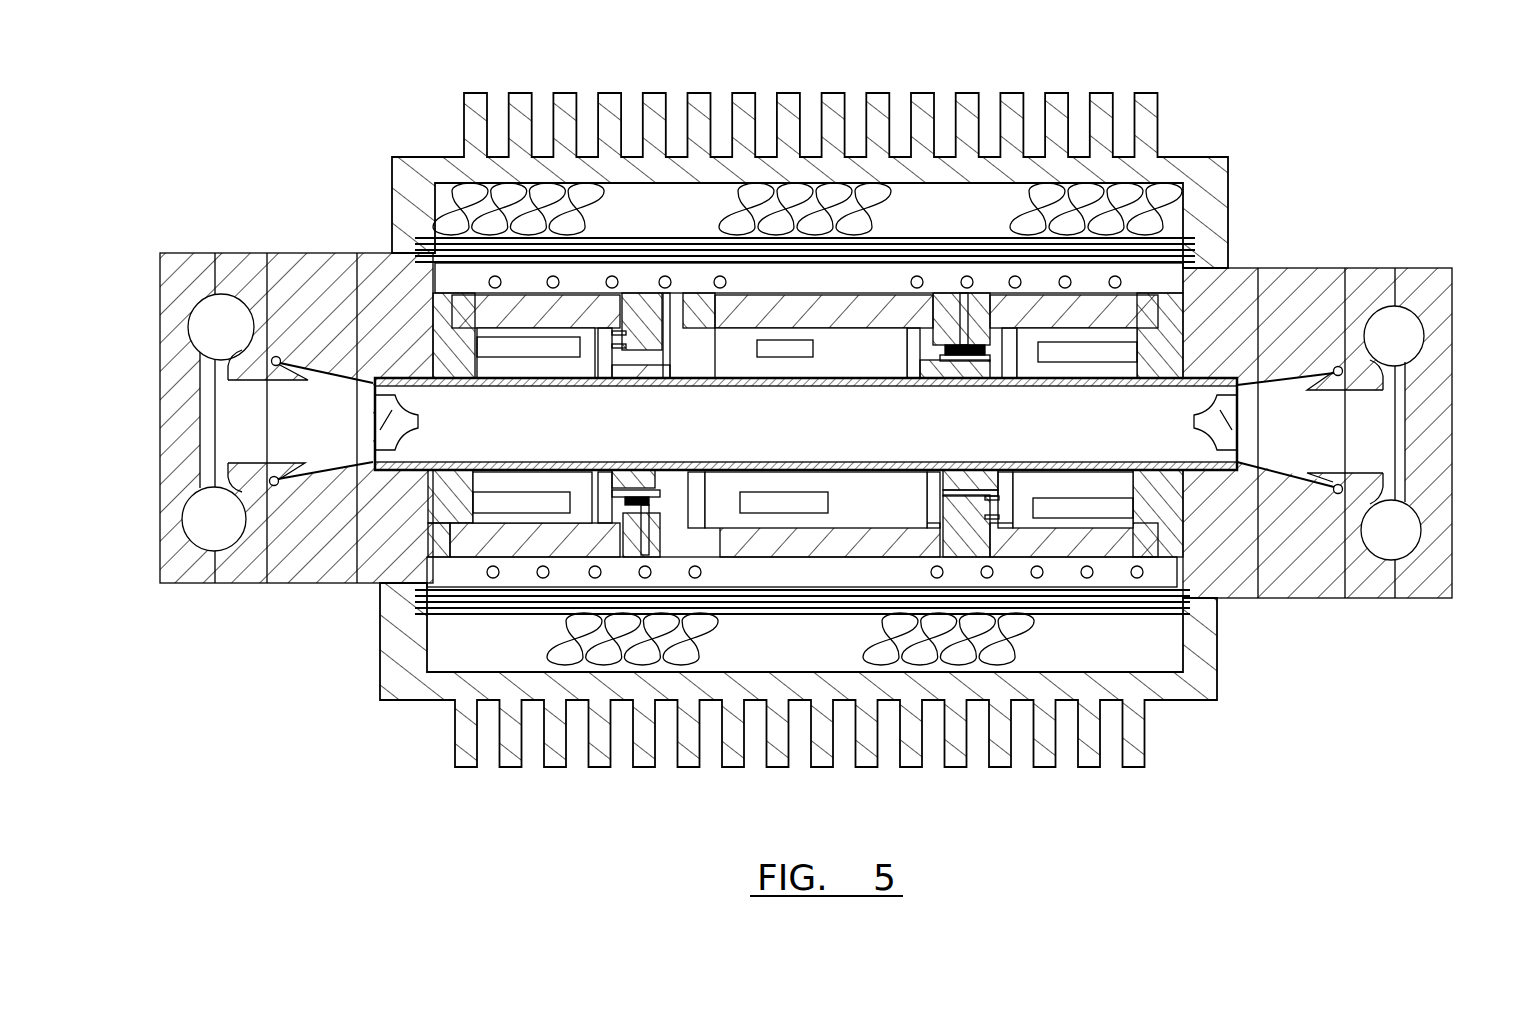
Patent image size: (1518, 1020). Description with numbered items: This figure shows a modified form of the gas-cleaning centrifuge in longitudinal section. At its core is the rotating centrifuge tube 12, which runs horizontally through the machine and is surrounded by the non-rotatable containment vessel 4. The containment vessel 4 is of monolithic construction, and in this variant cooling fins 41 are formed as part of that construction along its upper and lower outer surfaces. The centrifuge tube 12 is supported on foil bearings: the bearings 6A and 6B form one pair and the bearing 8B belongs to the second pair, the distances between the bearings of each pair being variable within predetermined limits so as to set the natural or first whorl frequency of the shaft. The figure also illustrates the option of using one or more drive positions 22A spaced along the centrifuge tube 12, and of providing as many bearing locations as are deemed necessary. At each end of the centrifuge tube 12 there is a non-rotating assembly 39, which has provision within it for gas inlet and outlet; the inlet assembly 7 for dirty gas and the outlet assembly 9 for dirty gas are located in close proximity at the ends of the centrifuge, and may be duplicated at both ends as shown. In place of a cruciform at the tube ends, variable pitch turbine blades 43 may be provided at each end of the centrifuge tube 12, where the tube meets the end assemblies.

The non-rotatable containment vessel 4 is at (1213, 175).
The cooling fins 41 is at (1095, 165).
The foil bearing 6A is at (507, 342).
The foil bearing 6B is at (778, 347).
The foil bearing 8B is at (1107, 337).
The drive position 22A is at (655, 330).
The centrifuge tube 12 is at (1225, 427).
The variable pitch turbine blades 43 is at (367, 465).
The outlet assembly for dirty gas 9 is at (285, 358).
The inlet assembly for dirty gas 7 is at (203, 523).
The non-rotating assembly 39 is at (203, 578).